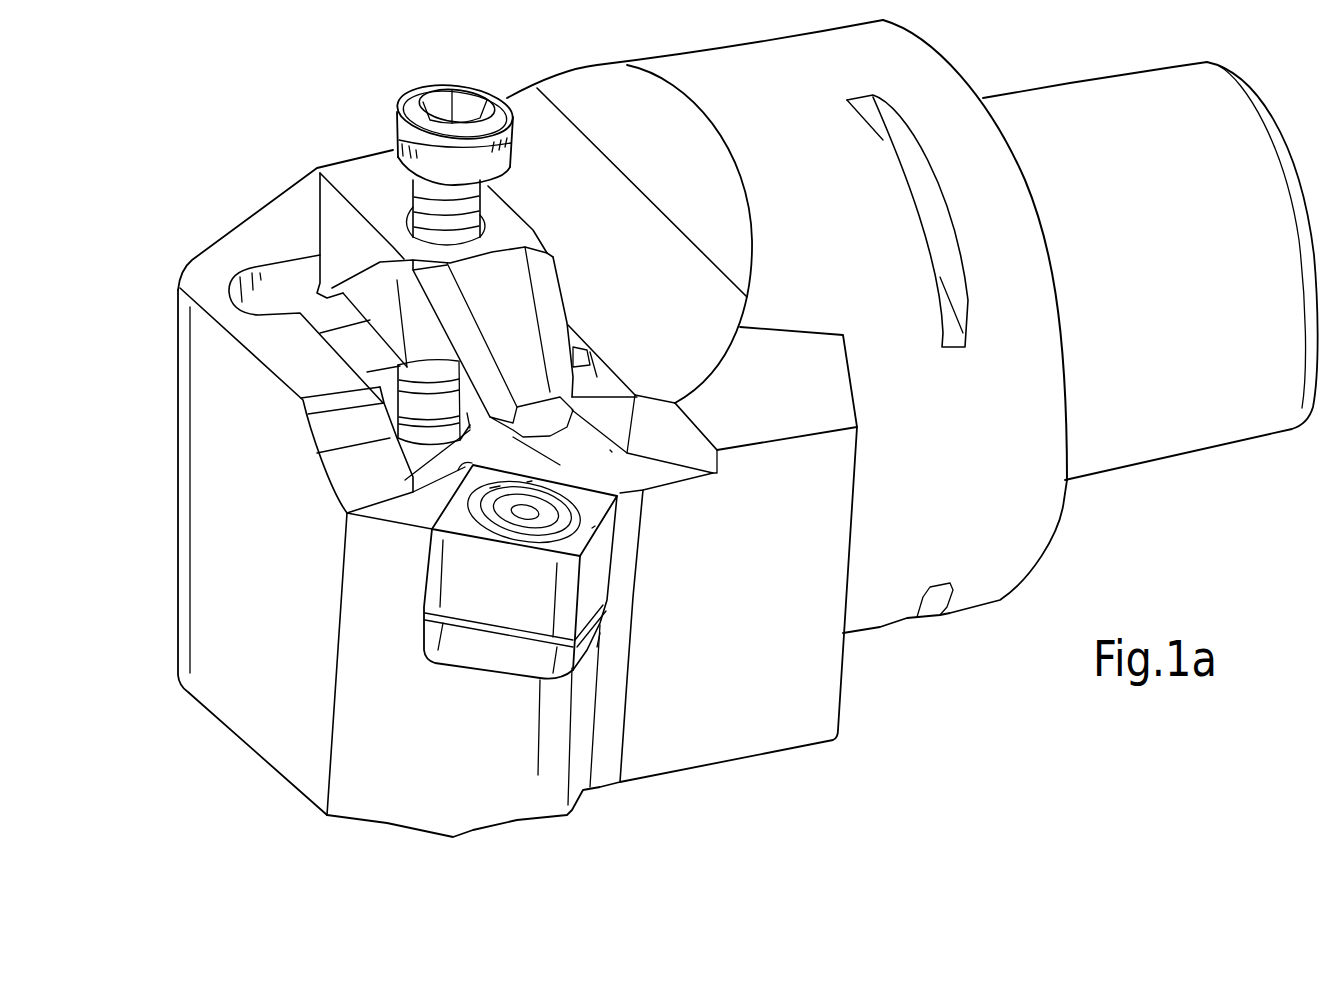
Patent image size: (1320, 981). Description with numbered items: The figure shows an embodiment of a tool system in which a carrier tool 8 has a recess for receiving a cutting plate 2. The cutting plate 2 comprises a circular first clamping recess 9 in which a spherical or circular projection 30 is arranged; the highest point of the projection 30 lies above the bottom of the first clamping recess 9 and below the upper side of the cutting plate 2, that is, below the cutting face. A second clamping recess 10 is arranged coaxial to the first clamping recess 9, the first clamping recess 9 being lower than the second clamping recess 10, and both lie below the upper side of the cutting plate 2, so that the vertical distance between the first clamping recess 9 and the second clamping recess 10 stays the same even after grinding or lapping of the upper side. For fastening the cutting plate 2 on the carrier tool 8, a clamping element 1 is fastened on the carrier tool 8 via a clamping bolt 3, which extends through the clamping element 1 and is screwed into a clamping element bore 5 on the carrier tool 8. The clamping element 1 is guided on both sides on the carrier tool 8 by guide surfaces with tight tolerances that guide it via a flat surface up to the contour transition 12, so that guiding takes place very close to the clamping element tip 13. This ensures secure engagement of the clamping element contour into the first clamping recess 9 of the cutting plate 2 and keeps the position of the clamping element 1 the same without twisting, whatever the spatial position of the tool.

The clamping element 1 is at (357, 187).
The cutting plate 2 is at (506, 612).
The clamping bolt 3 is at (393, 137).
The clamping element bore 5 is at (347, 513).
The carrier tool 8 is at (1167, 428).
The first clamping recess 9 is at (592, 528).
The second clamping recess 10 is at (527, 482).
The contour transition 12 is at (453, 288).
The clamping element tip 13 is at (610, 450).
The projection 30 is at (490, 488).